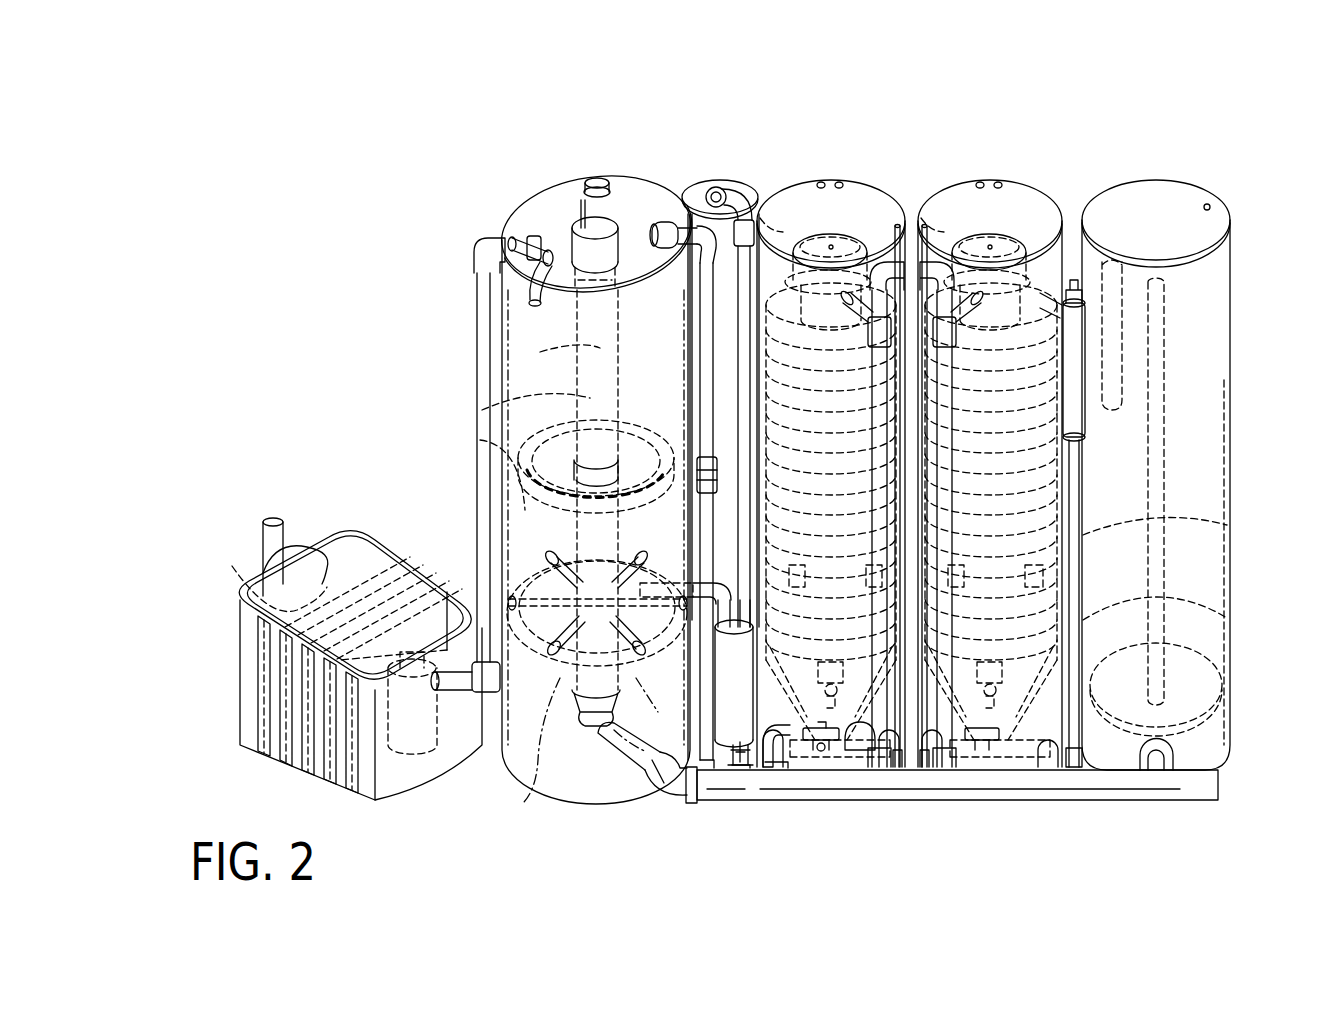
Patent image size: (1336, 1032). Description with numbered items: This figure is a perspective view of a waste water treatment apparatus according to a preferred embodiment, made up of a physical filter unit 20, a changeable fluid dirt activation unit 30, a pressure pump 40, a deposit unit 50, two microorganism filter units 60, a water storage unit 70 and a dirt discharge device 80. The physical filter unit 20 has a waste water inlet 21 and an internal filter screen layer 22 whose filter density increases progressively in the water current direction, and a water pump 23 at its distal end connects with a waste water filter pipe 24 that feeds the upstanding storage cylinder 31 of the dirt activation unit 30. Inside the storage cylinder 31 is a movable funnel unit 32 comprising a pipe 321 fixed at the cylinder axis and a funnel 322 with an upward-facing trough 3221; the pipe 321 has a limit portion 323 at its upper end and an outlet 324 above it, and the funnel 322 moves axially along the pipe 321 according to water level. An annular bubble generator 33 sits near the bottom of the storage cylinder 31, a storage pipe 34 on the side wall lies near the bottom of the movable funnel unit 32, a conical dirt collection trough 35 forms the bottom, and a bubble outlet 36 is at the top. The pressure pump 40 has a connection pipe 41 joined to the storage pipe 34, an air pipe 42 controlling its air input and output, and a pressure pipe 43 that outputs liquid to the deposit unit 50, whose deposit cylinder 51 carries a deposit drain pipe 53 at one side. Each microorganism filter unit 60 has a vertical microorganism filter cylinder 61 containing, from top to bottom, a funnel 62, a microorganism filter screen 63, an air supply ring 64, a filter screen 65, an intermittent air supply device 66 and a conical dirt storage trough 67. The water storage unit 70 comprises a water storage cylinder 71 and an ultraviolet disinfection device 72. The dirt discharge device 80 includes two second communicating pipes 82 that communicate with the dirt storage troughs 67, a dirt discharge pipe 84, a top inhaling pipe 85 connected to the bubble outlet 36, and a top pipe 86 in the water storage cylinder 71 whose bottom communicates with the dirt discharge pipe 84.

The physical filter unit 20 is at (240, 654).
The waste water inlet 21 is at (268, 520).
The filter screen layer 22 is at (262, 575).
The water pump 23 is at (412, 760).
The waste water filter pipe 24 is at (483, 333).
The changeable fluid dirt activation unit 30 is at (516, 196).
The storage cylinder 31 is at (552, 184).
The movable funnel unit 32 is at (540, 352).
The pipe 321 is at (600, 398).
The funnel 322 is at (525, 440).
The trough 3221 is at (540, 508).
The limit portion 323 is at (507, 248).
The outlet 324 is at (545, 230).
The annular bubble generator 33 is at (505, 575).
The storage pipe 34 is at (624, 762).
The conical dirt collection trough 35 is at (524, 790).
The bubble outlet 36 is at (588, 248).
The pressure pump 40 is at (692, 804).
The connection pipe 41 is at (656, 797).
The air pipe 42 is at (734, 682).
The pressure pipe 43 is at (752, 188).
The deposit unit 50 is at (697, 181).
The deposit cylinder 51 is at (708, 180).
The deposit drain pipe 53 is at (796, 228).
The microorganism filter unit 60 is at (889, 185).
The microorganism filter cylinder 61 is at (1052, 197).
The funnel 62 is at (847, 236).
The microorganism filter screen 63 is at (1228, 525).
The air supply ring 64 is at (1232, 618).
The filter screen 65 is at (905, 762).
The intermittent air supply device 66 is at (858, 752).
The conical dirt storage trough 67 is at (814, 752).
The water storage unit 70 is at (1225, 194).
The water storage cylinder 71 is at (1232, 298).
The ultraviolet rays disinfection device 72 is at (1078, 347).
The dirt discharge device 80 is at (1222, 786).
The second communicating pipe 82 is at (903, 228).
The dirt discharge pipe 84 is at (1138, 791).
The top inhaling pipe 85 is at (654, 250).
The top pipe 86 is at (1158, 418).